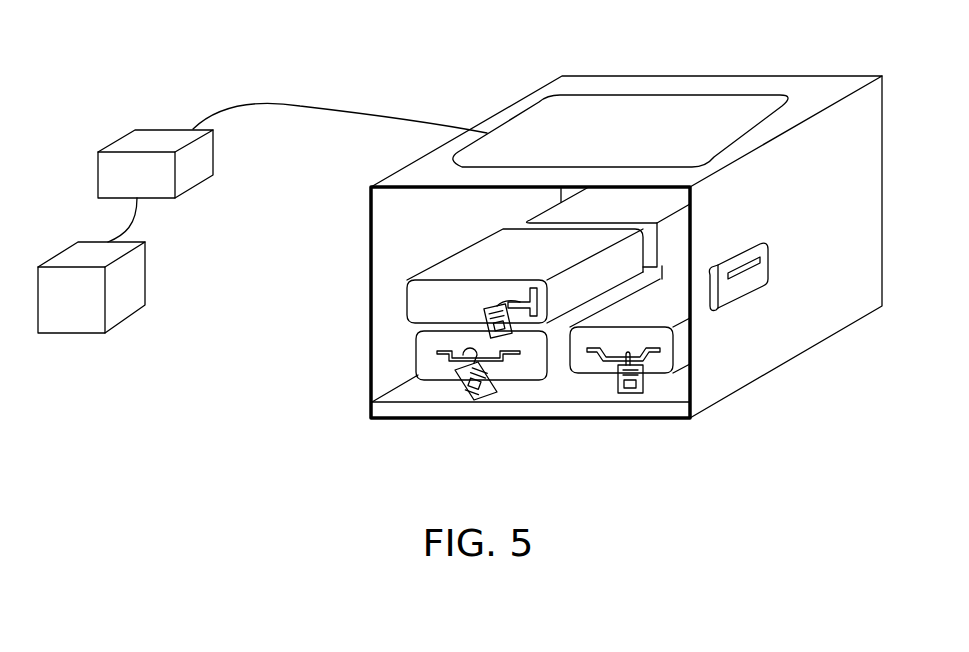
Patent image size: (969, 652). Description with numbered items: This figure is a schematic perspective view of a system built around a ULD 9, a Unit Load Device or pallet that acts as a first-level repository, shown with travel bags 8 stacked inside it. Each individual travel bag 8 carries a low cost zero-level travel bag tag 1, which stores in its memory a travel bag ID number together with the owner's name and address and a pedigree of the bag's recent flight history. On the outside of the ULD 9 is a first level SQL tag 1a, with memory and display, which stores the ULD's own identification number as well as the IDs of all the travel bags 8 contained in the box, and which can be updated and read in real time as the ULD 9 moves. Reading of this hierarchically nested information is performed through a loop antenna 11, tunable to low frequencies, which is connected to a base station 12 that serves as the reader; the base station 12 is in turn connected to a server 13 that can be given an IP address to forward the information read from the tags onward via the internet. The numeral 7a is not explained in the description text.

The travel bag tag 1 is at (460, 385).
The first level SQL tag 1a is at (803, 345).
The handle 7a is at (748, 272).
The travel bag 8 is at (422, 298).
The ULD 9 is at (748, 76).
The loop antenna 11 is at (642, 95).
The base station 12 is at (165, 129).
The server 13 is at (70, 335).